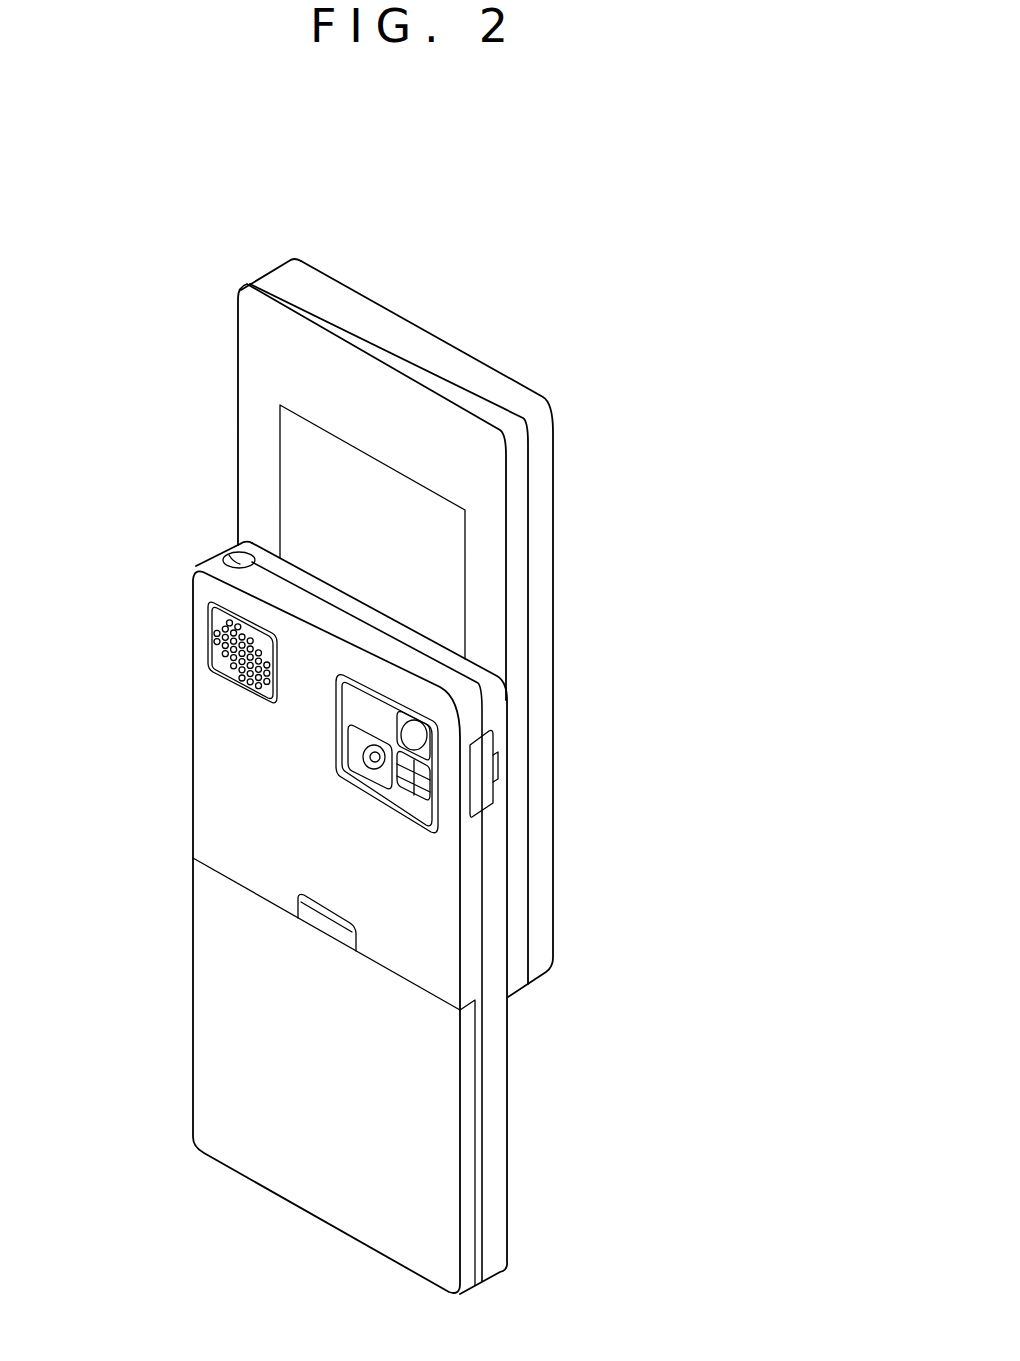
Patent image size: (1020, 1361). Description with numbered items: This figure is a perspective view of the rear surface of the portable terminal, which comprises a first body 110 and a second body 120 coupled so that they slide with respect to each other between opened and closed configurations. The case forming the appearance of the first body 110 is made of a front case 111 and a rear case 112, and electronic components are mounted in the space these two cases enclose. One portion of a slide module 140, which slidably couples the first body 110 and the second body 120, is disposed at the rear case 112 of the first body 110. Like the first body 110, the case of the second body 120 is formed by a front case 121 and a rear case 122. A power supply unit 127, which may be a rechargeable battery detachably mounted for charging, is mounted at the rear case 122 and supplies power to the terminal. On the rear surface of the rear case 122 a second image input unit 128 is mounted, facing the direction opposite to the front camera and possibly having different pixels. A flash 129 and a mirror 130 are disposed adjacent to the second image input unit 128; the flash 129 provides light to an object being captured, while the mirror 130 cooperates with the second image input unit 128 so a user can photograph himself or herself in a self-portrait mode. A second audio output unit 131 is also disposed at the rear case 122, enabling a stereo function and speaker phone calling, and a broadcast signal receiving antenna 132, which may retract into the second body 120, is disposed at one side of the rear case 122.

The first body 110 is at (203, 416).
The front case 111 is at (287, 268).
The rear case 112 is at (265, 282).
The slide module 140 is at (282, 497).
The second body 120 is at (168, 761).
The front case 121 is at (497, 1027).
The rear case 122 is at (470, 962).
The power supply unit 127 is at (222, 958).
The second image input unit 128 is at (376, 757).
The flash 129 is at (473, 820).
The mirror 130 is at (413, 732).
The second audio output unit 131 is at (208, 648).
The broadcast signal receiving antenna 132 is at (230, 555).